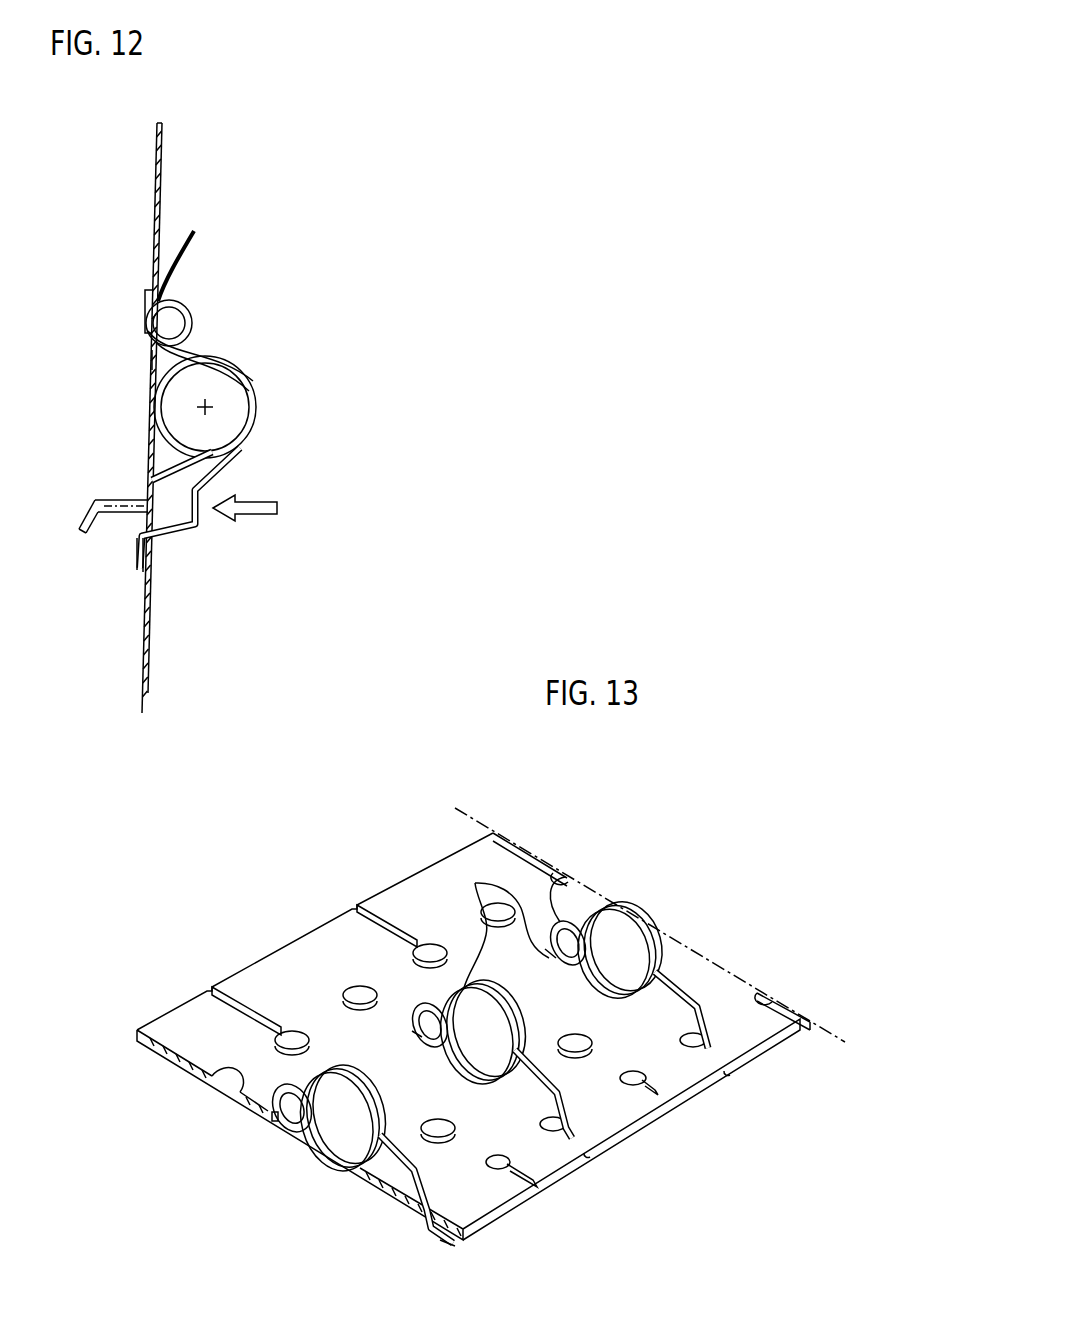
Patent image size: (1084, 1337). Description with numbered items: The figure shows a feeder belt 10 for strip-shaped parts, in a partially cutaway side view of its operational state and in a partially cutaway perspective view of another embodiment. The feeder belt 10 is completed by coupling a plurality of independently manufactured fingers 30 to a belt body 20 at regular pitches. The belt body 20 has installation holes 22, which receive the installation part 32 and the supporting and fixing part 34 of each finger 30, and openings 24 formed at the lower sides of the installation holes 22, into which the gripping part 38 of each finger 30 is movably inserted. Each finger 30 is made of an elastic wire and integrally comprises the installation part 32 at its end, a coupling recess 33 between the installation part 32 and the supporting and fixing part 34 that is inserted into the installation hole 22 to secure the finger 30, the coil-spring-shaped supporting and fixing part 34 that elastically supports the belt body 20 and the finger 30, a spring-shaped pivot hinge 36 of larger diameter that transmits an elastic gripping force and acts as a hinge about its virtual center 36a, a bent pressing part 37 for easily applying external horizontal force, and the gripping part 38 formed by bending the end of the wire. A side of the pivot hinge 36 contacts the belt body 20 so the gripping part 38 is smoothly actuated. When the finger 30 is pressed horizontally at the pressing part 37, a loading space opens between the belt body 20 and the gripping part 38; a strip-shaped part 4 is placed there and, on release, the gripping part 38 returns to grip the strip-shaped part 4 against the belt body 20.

In FIG. 12, the strip-shaped part 4 is at (153, 646).
In FIG. 12, the feeder belt 10 is at (268, 212).
In FIG. 13, the feeder belt 10 is at (270, 935).
In FIG. 12, the belt body 20 is at (157, 164).
In FIG. 13, the belt body 20 is at (410, 887).
In FIG. 12, the installation hole 22 is at (150, 359).
In FIG. 13, the installation hole 22 is at (503, 923).
In FIG. 12, the opening 24 is at (147, 500).
In FIG. 13, the opening 24 is at (680, 1040).
In FIG. 12, the finger 30 is at (241, 350).
In FIG. 13, the finger 30 is at (403, 1017).
In FIG. 12, the installation part 32 is at (146, 300).
In FIG. 13, the installation part 32 is at (272, 1116).
In FIG. 12, the coupling recess 33 is at (183, 253).
In FIG. 12, the supporting and fixing part 34 is at (186, 318).
In FIG. 13, the supporting and fixing part 34 is at (292, 1133).
In FIG. 12, the pivot hinge 36 is at (242, 407).
In FIG. 13, the pivot hinge 36 is at (333, 1165).
In FIG. 12, the virtual center 36a is at (214, 402).
In FIG. 12, the bent pressing part 37 is at (200, 512).
In FIG. 13, the bent pressing part 37 is at (398, 1195).
In FIG. 12, the gripping part 38 is at (140, 567).
In FIG. 13, the gripping part 38 is at (440, 1242).